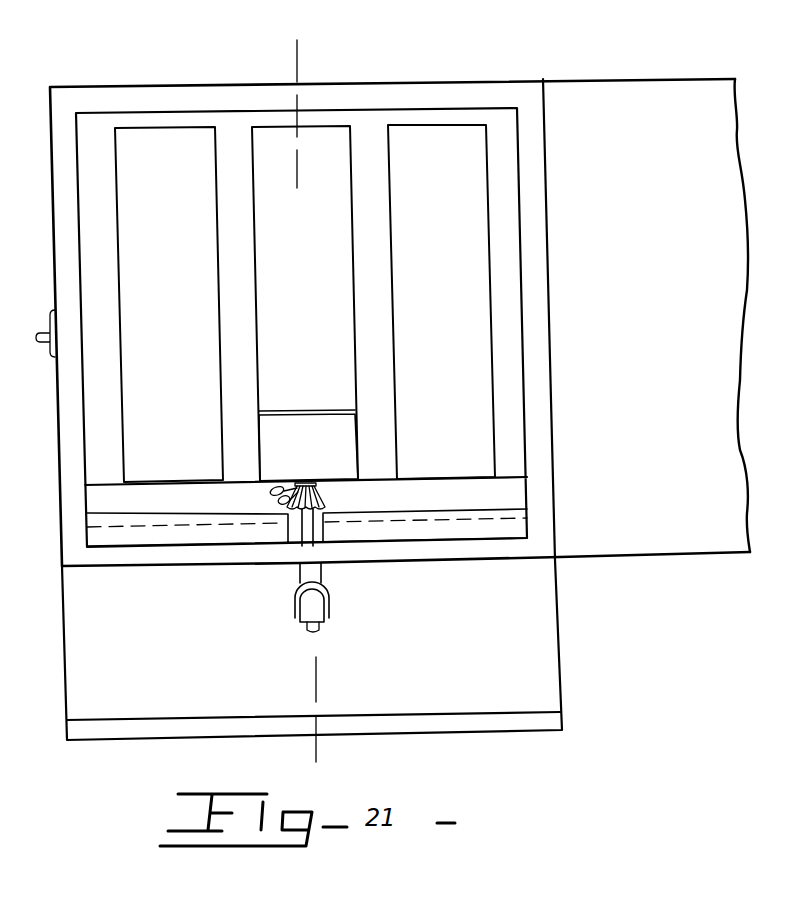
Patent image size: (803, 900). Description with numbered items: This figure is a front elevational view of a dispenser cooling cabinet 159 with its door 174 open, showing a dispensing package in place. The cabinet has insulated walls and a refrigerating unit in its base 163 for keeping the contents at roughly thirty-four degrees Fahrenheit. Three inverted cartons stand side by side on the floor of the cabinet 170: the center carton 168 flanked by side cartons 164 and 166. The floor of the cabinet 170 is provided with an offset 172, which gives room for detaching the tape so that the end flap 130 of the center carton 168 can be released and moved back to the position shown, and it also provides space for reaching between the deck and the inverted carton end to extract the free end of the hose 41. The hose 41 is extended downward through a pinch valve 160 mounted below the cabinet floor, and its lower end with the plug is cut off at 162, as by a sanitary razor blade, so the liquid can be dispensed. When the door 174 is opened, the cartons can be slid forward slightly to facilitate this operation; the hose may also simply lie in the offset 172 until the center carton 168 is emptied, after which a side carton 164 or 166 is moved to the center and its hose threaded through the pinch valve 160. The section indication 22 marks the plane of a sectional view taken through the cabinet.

The cooling cabinet 159 is at (106, 83).
The carton 164 is at (170, 140).
The center carton 168 is at (323, 143).
The carton 166 is at (455, 145).
The door 174 is at (635, 90).
The end flap 130 is at (283, 438).
The floor of the cabinet 170 is at (515, 474).
The offset 172 is at (512, 498).
The base 163 is at (493, 615).
The hose 41 is at (305, 533).
The pinch valve 160 is at (295, 602).
The plug cut-off point 162 is at (316, 629).
The section line 22- 22 is at (280, 37).